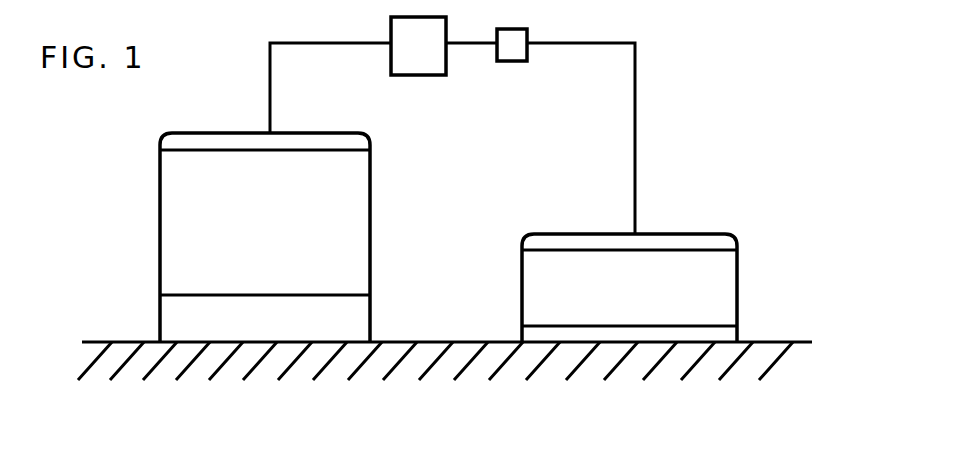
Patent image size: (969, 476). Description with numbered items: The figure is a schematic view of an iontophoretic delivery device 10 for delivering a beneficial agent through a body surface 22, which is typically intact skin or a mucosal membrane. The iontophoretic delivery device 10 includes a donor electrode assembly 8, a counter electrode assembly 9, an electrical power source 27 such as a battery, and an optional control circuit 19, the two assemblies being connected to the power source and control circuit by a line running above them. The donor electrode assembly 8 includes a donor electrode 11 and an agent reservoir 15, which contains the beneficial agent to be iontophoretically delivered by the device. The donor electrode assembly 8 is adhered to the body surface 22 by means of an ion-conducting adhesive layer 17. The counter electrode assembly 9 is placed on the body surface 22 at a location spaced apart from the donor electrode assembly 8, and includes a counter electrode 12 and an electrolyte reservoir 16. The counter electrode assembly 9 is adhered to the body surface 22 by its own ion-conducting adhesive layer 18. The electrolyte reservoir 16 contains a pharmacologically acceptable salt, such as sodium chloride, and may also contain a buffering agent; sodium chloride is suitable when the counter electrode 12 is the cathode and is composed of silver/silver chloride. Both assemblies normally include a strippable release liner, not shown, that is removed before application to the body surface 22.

The donor electrode assembly 8 is at (152, 148).
The counter electrode assembly 9 is at (732, 226).
The iontophoretic delivery device 10 is at (266, 44).
The donor electrode 11 is at (214, 131).
The counter electrode 12 is at (666, 240).
The agent reservoir 15 is at (166, 239).
The electrolyte reservoir 16 is at (720, 276).
The ion-conducting adhesive layer 17 is at (166, 310).
The ion-conducting adhesive layer 18 is at (722, 332).
The control circuit 19 is at (514, 58).
The body surface 22 is at (460, 341).
The electrical power source 27 is at (425, 70).